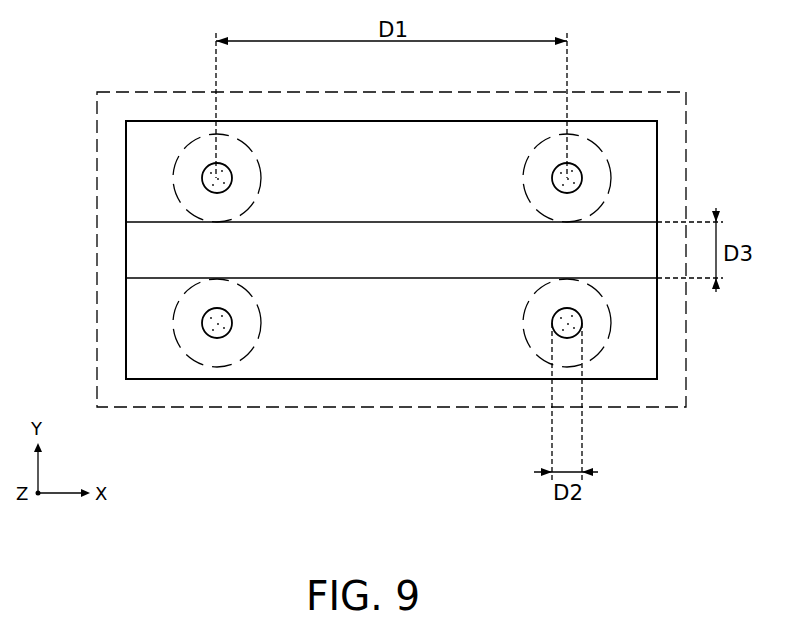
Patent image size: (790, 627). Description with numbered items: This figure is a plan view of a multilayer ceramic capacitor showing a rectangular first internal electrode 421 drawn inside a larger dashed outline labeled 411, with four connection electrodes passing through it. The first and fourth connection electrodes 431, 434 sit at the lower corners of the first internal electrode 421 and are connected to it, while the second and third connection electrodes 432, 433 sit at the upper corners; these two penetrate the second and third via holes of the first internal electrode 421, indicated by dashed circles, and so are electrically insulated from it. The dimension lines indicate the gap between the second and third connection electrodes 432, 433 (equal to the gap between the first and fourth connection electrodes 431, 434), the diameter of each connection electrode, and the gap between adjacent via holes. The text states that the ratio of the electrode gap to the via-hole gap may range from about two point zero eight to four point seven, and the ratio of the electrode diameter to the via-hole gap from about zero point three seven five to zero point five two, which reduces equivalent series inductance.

The first plate 411 is at (335, 393).
The first internal electrode 421 is at (414, 360).
The first connection electrode 431 is at (203, 325).
The second connection electrode 432 is at (203, 173).
The third connection electrode 433 is at (581, 176).
The fourth connection electrode 434 is at (581, 324).